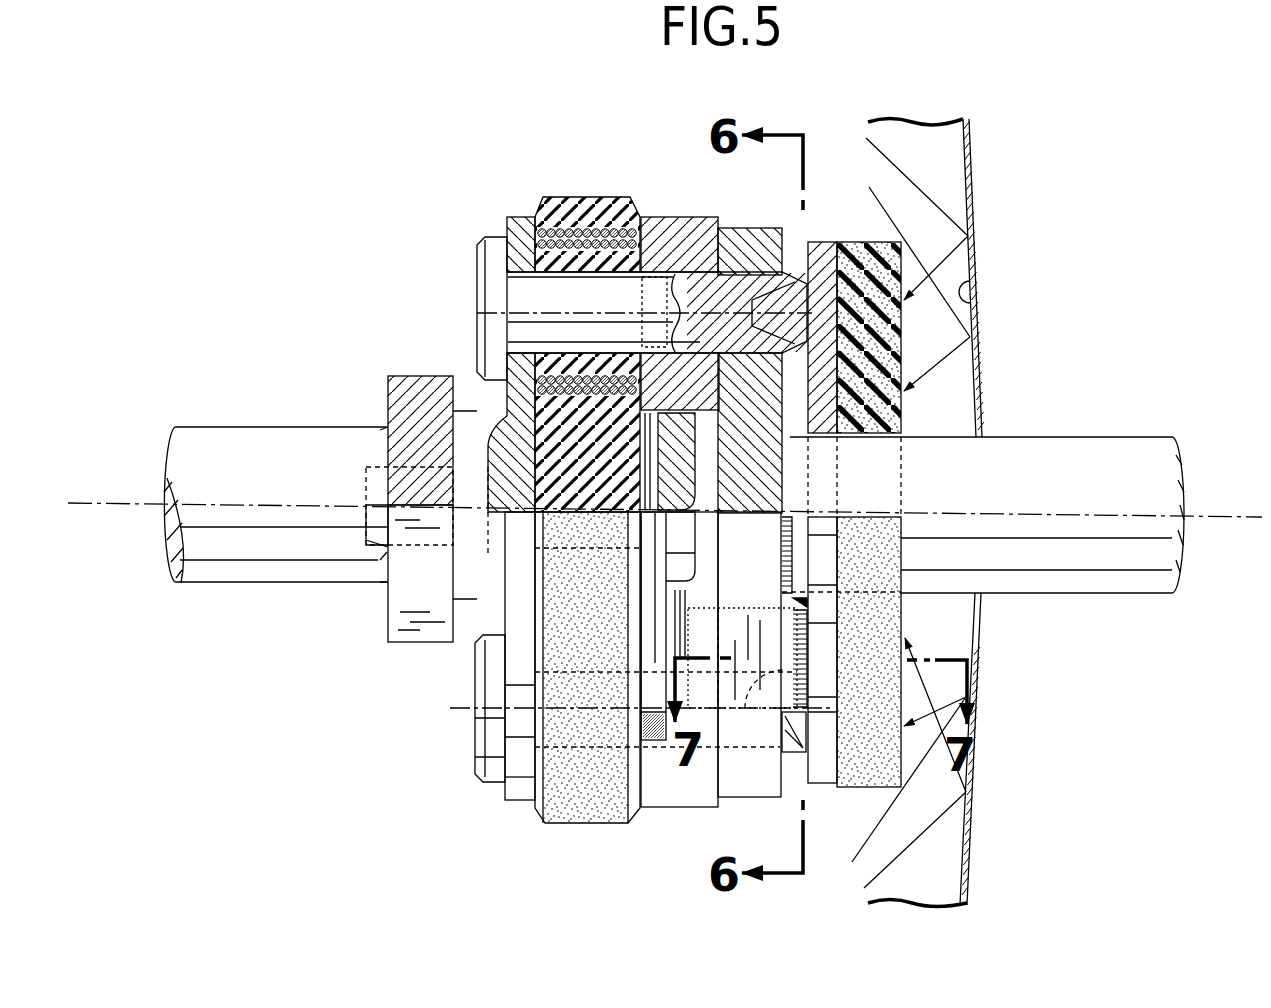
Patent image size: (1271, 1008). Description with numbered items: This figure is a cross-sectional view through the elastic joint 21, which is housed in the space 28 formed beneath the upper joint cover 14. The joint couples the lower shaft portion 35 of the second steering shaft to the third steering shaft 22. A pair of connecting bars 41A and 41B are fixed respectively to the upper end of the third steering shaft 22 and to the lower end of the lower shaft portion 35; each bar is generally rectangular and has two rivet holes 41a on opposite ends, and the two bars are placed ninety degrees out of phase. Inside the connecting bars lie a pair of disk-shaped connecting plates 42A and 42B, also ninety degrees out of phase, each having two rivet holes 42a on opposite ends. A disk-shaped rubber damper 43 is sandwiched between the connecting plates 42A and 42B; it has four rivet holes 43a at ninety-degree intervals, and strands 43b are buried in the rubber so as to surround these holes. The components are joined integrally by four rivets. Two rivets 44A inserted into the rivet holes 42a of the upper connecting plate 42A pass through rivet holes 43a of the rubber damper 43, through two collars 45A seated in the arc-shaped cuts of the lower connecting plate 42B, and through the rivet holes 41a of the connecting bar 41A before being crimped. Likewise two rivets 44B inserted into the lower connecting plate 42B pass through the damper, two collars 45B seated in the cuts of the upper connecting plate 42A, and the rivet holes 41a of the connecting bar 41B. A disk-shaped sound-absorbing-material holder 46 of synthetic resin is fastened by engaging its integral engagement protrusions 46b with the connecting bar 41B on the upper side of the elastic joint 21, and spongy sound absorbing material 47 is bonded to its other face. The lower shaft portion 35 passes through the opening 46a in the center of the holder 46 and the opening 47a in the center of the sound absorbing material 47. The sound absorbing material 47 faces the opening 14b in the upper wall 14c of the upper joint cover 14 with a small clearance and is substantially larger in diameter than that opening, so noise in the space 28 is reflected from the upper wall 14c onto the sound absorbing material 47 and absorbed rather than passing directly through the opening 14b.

The upper joint cover 14 is at (983, 513).
The opening 14b is at (981, 386).
The upper wall 14c is at (971, 275).
The elastic joint 21 is at (519, 498).
The third steering shaft 22 is at (265, 447).
The space 28 is at (243, 244).
The lower shaft portion 35 is at (1073, 567).
The connecting bar 41A is at (385, 390).
The connecting bar 41B is at (795, 475).
The rivet holes 41a is at (755, 232).
The connecting plate 42A is at (655, 748).
The connecting plate 42B is at (527, 212).
The rivet holes 42a is at (520, 278).
The rubber damper 43 is at (556, 528).
The rivet holes 43a is at (553, 273).
The strands 43b is at (592, 229).
The rivets 44A is at (693, 545).
The rivets 44B is at (480, 294).
The collars 45A is at (472, 422).
The collars 45B is at (690, 230).
The sound-absorbing-material holder 46 is at (852, 579).
The opening 46a is at (823, 437).
The engagement protrusions 46b is at (738, 620).
The sound absorbing material 47 is at (912, 516).
The opening 47a is at (883, 437).